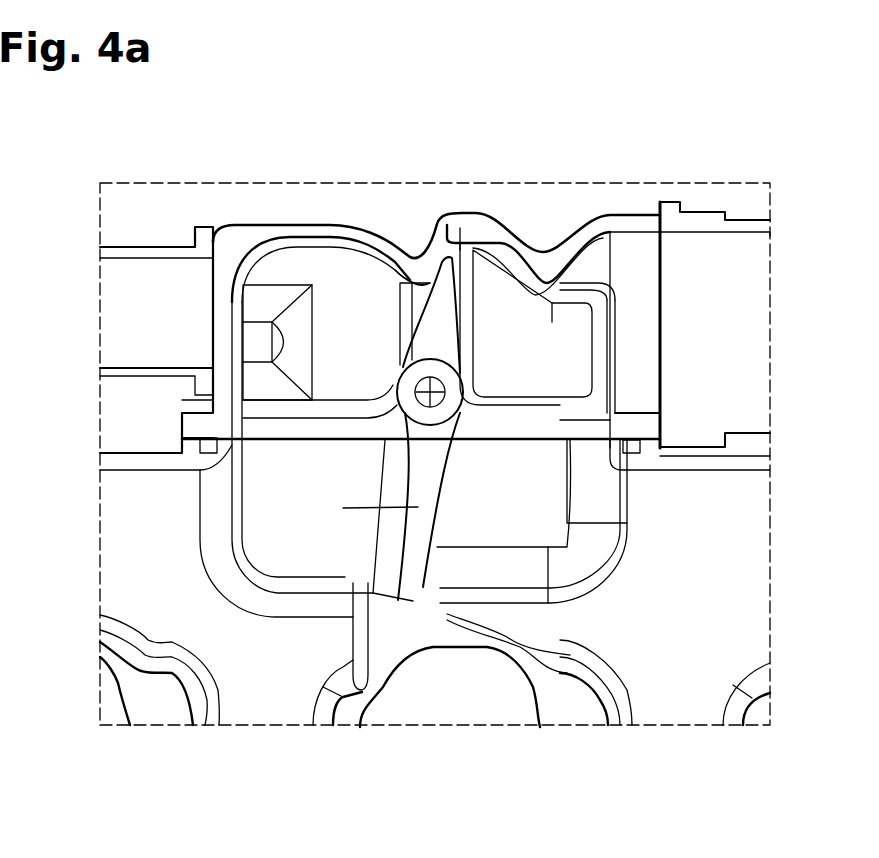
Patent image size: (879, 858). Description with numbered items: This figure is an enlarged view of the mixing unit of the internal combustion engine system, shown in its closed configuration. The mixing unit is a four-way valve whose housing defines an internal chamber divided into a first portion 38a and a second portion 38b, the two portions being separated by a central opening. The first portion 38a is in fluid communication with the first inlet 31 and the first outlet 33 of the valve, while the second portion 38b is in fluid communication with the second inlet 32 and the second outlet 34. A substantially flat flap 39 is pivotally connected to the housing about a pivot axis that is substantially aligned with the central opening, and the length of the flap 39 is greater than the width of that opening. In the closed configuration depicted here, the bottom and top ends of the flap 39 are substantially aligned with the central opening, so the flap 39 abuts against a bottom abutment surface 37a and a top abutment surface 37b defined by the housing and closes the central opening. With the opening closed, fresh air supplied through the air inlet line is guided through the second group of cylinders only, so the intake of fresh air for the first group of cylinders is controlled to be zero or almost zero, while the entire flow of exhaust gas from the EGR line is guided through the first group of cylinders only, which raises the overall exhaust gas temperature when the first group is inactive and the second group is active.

The first inlet 31 is at (212, 318).
The second inlet 32 is at (662, 327).
The first outlet 33 is at (242, 558).
The second outlet 34 is at (618, 568).
The bottom abutment surface 37a is at (440, 590).
The top abutment surface 37b is at (372, 285).
The first portion 38a is at (336, 350).
The second portion 38b is at (526, 325).
The flap 39 is at (418, 507).